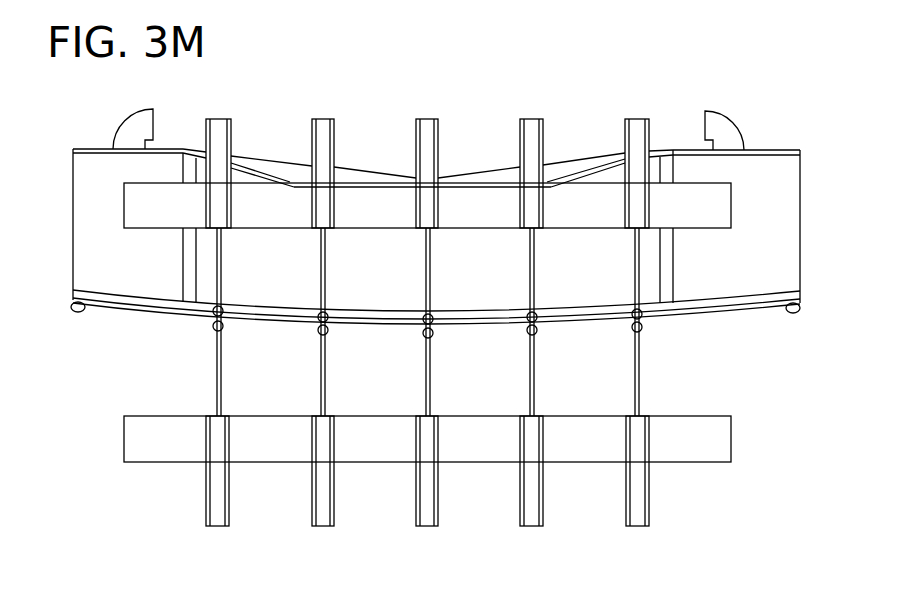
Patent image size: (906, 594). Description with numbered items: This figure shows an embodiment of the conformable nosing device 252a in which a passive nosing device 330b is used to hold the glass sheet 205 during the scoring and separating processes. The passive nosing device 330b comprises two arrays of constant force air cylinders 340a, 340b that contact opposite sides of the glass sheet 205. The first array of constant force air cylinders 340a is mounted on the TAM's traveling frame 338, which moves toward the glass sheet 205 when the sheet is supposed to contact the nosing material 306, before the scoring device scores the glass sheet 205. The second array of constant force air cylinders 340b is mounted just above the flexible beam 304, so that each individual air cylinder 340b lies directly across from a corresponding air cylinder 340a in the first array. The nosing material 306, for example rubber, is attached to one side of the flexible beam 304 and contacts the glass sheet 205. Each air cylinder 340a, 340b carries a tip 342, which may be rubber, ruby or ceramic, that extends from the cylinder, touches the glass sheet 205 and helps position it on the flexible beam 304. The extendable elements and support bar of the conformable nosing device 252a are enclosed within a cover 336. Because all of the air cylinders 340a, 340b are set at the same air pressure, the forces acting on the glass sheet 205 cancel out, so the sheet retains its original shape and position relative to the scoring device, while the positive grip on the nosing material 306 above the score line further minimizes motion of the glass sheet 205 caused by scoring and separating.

The conformable nosing device 252a is at (717, 99).
The passive nosing device 330b is at (68, 103).
The second array of constant force air cylinders 340b is at (312, 156).
The first array of constant force air cylinders 340a is at (312, 484).
The tip 342 is at (318, 330).
The flexible beam 304 is at (75, 291).
The nosing material 306 is at (97, 317).
The glass sheet 205 is at (97, 305).
The cover 336 is at (767, 248).
The traveling frame 338 is at (697, 437).